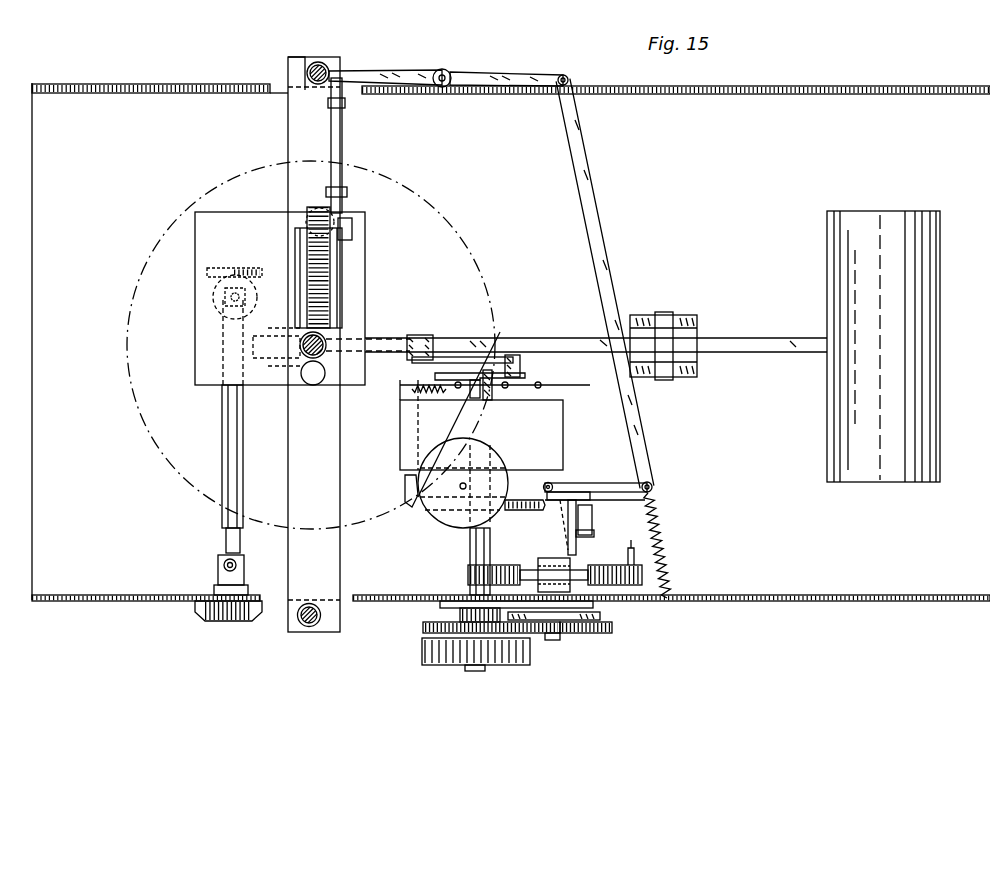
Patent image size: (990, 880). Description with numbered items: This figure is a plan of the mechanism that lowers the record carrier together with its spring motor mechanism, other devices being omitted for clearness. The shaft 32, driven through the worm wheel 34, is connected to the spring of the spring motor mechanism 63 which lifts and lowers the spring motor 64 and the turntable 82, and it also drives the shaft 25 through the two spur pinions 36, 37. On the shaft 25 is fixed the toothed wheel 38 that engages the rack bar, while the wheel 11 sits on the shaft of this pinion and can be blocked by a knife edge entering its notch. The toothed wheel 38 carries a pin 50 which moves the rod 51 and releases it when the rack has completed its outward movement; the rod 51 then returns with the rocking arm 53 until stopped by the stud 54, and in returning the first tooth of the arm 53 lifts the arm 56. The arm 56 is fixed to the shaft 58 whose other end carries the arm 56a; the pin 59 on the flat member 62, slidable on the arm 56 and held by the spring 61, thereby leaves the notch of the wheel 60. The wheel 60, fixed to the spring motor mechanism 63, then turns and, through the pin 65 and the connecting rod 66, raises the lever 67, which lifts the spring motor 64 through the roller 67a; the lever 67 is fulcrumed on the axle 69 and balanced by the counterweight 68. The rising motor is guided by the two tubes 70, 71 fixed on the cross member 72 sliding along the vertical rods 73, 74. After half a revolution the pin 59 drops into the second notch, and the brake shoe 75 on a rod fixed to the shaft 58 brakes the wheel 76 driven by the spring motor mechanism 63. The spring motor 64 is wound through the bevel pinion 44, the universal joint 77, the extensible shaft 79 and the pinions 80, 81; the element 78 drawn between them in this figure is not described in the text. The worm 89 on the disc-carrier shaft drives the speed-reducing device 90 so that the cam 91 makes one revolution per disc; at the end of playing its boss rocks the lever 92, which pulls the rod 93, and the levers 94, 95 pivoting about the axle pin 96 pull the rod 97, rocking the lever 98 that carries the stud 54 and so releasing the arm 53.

The wheel 11 is at (600, 616).
The shaft 25 is at (556, 642).
The shaft 32 is at (470, 557).
The worm wheel 34 is at (425, 658).
The spur pinion 36 is at (423, 622).
The spur pinion 37 is at (608, 630).
The toothed wheel 38 is at (495, 575).
The bevel pinion 44 is at (235, 620).
The pin 50 is at (631, 546).
The rod 51 is at (578, 555).
The rocking arm 53 is at (652, 498).
The stud 54 is at (563, 532).
The arm 56 is at (527, 512).
The arm 56a is at (548, 385).
The shaft 58 is at (405, 480).
The pin 59 is at (435, 364).
The wheel 60 is at (525, 375).
The spring 61 is at (420, 392).
The flat member 62 is at (495, 384).
The spring motor mechanism 63 is at (552, 444).
The spring motor 64 is at (215, 220).
The pin 65 is at (472, 396).
The connecting rod 66 is at (520, 360).
The lever 67 is at (584, 338).
The roller 67a is at (268, 360).
The counterweight 68 is at (902, 385).
The axle 69 is at (690, 362).
The tube 70 is at (305, 624).
The tube 71 is at (306, 68).
The cross member 72 is at (338, 616).
The vertical rod 73 is at (318, 624).
The vertical rod 74 is at (319, 62).
The brake shoe 75 is at (410, 505).
The wheel 76 is at (435, 520).
The universal joint 77 is at (238, 562).
The clutch member 78 is at (230, 300).
The extensible shaft 79 is at (232, 498).
The pinion 80 is at (212, 276).
The pinion 81 is at (216, 303).
The turntable 82 is at (128, 375).
The worm 89 is at (325, 340).
The speed-reducing device 90 is at (335, 290).
The cam 91 is at (352, 225).
The lever 92 is at (347, 196).
The rod 93 is at (342, 150).
The lever 94 is at (392, 73).
The lever 95 is at (500, 76).
The axle pin 96 is at (445, 69).
The rod 97 is at (596, 206).
The lever 98 is at (604, 483).